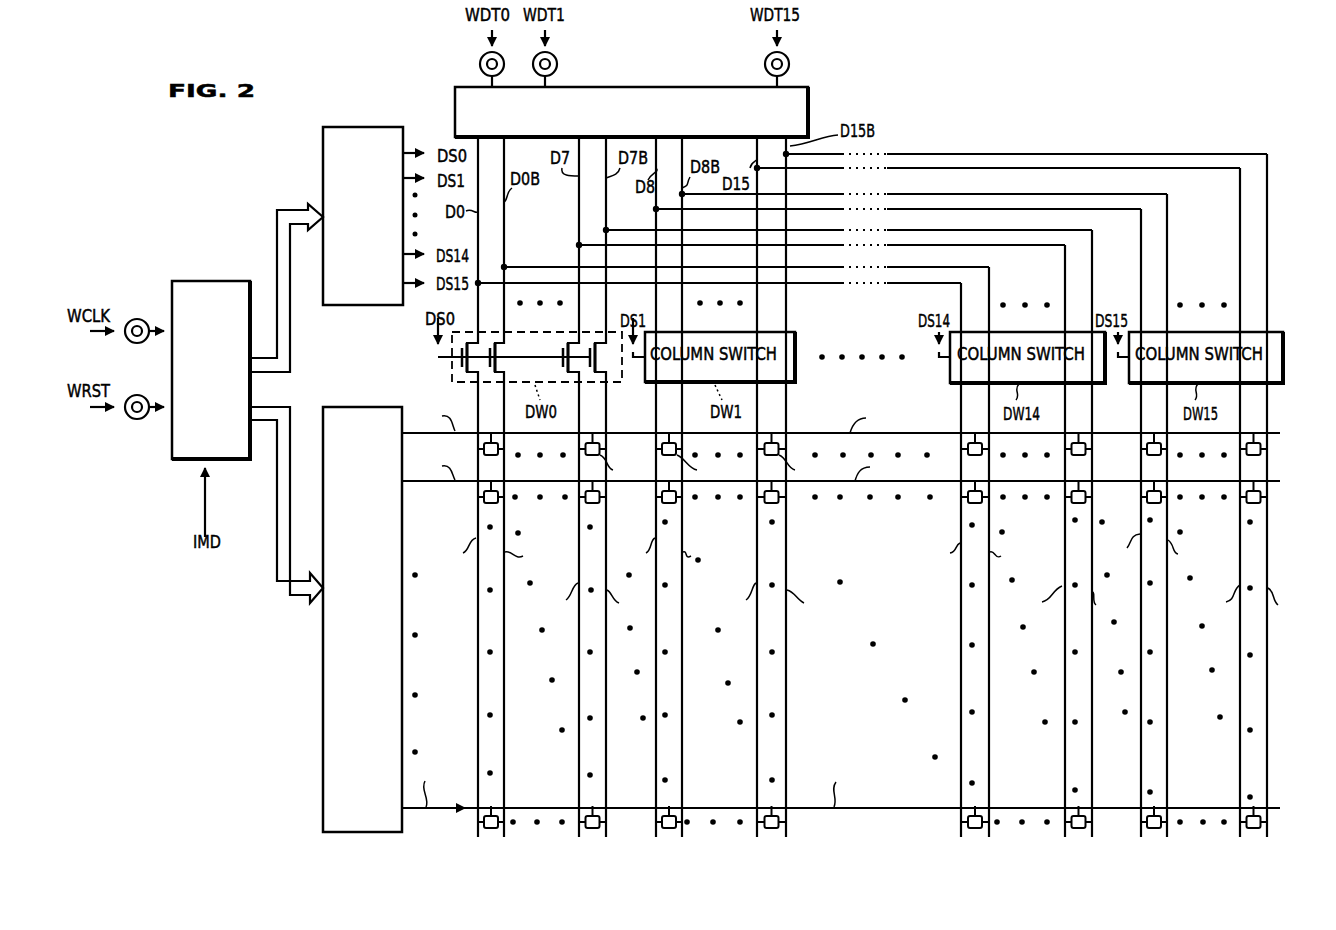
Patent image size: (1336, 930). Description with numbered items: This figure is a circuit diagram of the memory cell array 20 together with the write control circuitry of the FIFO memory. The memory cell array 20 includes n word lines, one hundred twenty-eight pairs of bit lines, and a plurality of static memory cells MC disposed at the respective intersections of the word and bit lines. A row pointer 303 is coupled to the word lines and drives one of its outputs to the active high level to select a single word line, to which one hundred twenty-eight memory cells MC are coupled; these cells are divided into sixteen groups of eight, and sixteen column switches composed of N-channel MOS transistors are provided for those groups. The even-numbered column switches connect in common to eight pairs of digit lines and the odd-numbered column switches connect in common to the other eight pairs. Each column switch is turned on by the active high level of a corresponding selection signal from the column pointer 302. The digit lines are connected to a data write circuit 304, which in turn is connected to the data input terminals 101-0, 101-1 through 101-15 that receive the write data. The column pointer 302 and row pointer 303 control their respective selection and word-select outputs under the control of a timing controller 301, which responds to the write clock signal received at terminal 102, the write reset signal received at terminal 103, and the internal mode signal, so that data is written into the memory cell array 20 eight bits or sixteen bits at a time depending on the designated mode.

The timing controller 301 is at (214, 281).
The column pointer 302 is at (366, 305).
The row pointer 303 is at (366, 407).
The data write circuit 304 is at (455, 110).
The data input terminal 101-0 is at (482, 56).
The data input terminal 101-1 is at (556, 57).
The data input terminal 101-15 is at (789, 59).
The terminal 102 is at (127, 341).
The terminal 103 is at (127, 419).
The memory cell array 20 is at (862, 618).
The memory cell MC is at (498, 455).